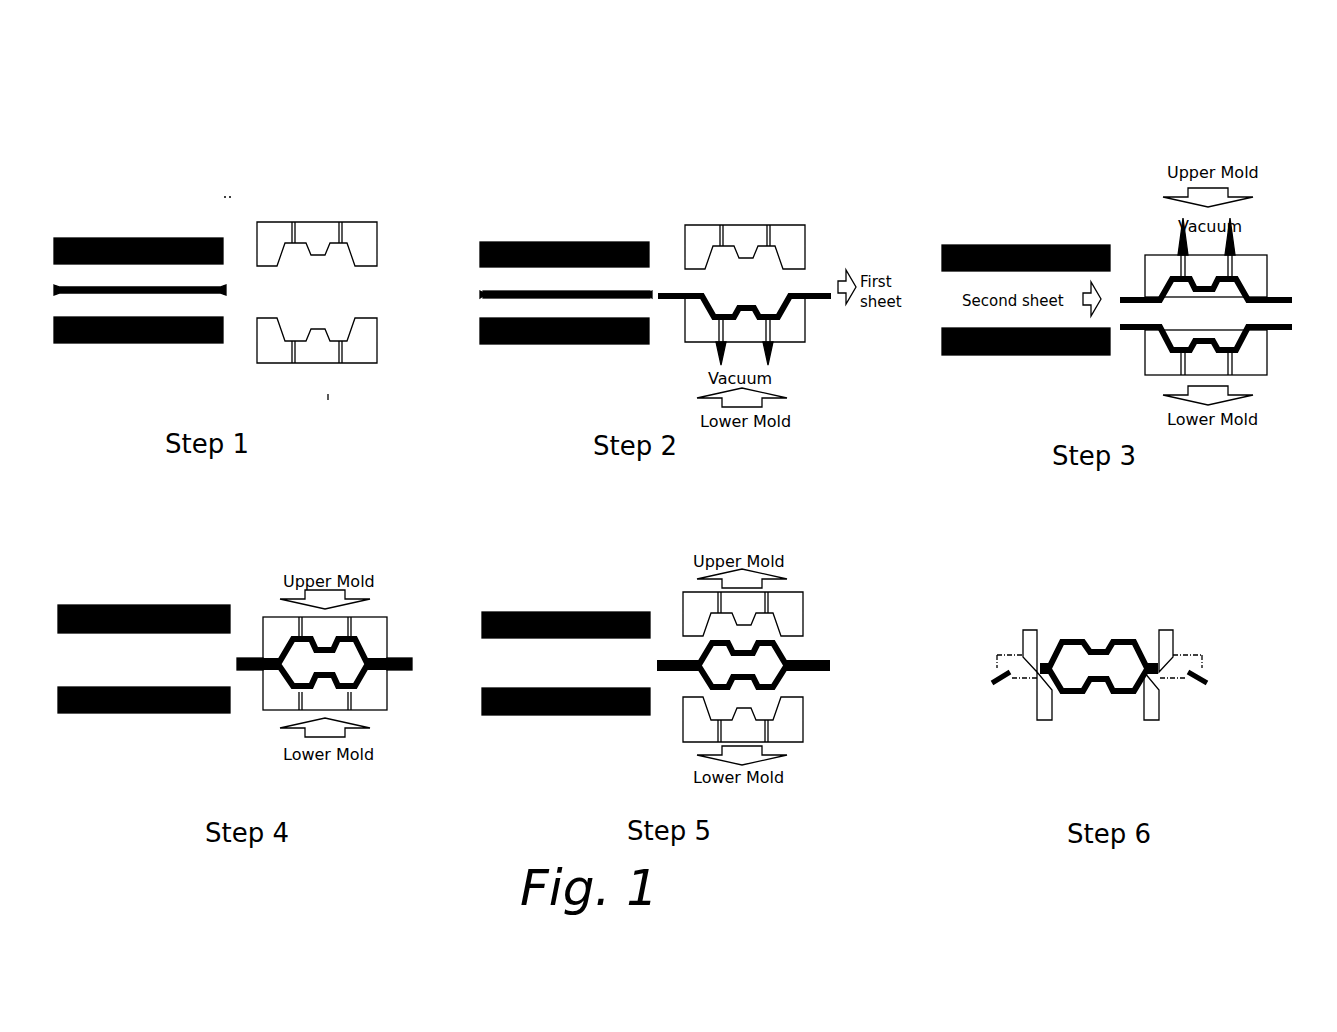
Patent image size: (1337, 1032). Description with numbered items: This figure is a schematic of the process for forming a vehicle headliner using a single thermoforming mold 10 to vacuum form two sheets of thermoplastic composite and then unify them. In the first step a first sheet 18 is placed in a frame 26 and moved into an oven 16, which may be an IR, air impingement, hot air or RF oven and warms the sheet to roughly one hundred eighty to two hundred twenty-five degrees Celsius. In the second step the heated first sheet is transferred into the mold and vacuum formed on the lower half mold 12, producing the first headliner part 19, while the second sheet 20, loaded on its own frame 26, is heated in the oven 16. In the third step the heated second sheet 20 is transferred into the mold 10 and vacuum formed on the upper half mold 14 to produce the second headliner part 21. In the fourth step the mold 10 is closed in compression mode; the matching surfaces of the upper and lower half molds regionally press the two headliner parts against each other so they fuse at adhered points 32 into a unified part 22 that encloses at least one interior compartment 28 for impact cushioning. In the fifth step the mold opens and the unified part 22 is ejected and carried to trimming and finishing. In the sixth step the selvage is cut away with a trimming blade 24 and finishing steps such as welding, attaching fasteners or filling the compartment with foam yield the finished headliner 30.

The thermoforming mold 10 is at (567, 407).
The lower half mold 12 is at (317, 353).
The upper half mold 14 is at (320, 242).
The oven 16 is at (130, 237).
The first sheet 18 is at (117, 295).
The first headliner part 19 is at (793, 290).
The second sheet 20 is at (545, 295).
The second headliner part 21 is at (1245, 278).
The unified part 22 is at (360, 637).
The trimming blade 24 is at (1020, 643).
The frame 26 is at (482, 297).
The interior compartment 28 is at (727, 667).
The headliner 30 is at (1133, 637).
The adhered points 32 is at (390, 668).